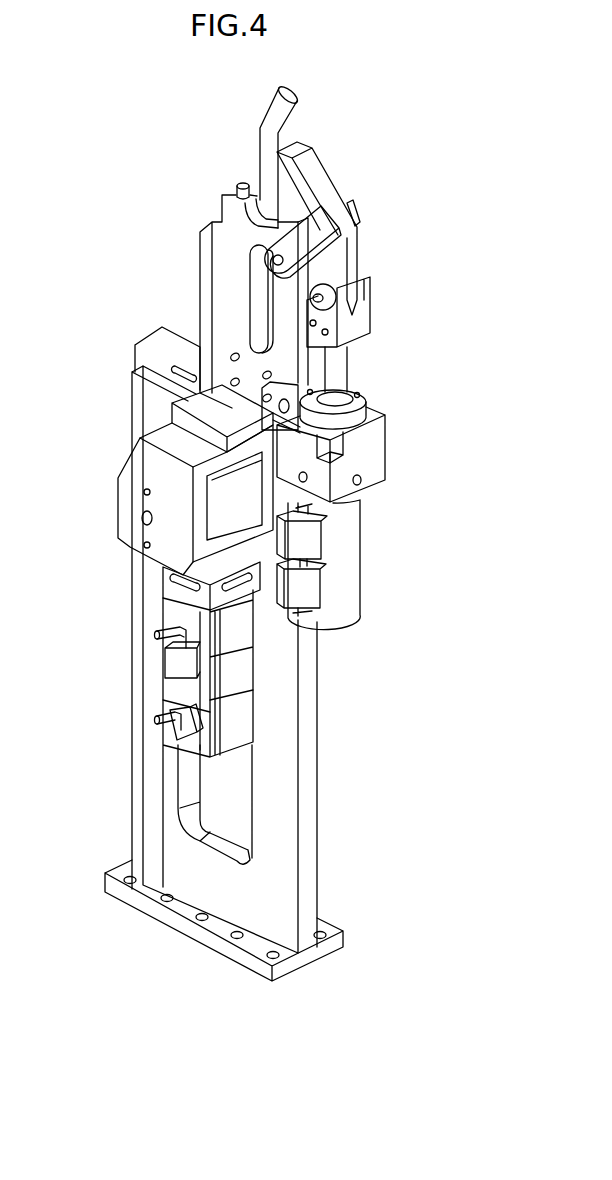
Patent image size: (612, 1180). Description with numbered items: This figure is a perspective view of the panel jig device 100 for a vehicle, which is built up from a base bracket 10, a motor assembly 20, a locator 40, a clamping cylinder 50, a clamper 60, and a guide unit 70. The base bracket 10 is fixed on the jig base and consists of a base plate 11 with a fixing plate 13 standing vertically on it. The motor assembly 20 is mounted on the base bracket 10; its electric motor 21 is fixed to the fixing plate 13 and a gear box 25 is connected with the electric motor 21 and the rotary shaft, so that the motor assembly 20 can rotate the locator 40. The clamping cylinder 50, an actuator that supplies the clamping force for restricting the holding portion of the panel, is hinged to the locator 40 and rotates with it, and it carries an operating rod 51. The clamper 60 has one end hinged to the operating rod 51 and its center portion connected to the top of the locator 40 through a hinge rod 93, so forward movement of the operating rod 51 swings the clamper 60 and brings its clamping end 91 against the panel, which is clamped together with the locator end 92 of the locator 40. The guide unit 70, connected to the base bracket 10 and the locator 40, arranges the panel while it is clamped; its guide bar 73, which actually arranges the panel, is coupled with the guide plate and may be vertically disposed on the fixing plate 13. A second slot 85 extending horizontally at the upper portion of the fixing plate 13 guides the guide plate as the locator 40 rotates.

The panel jig device 100 is at (254, 76).
The base bracket 10 is at (320, 854).
The base plate 11 is at (180, 907).
The fixing plate 13 is at (273, 792).
The motor assembly 20 is at (258, 661).
The electric motor 21 is at (238, 710).
The gear box 25 is at (232, 505).
The locator 40 is at (213, 286).
The clamping cylinder 50 is at (386, 416).
The operating rod 51 is at (341, 362).
The clamper 60 is at (310, 188).
The guide unit 70 is at (258, 160).
The guide bar 73 is at (262, 122).
The second slot 85 is at (163, 391).
The clamping end 91 is at (283, 133).
The locator end 92 is at (236, 187).
The hinge rod 93 is at (338, 225).